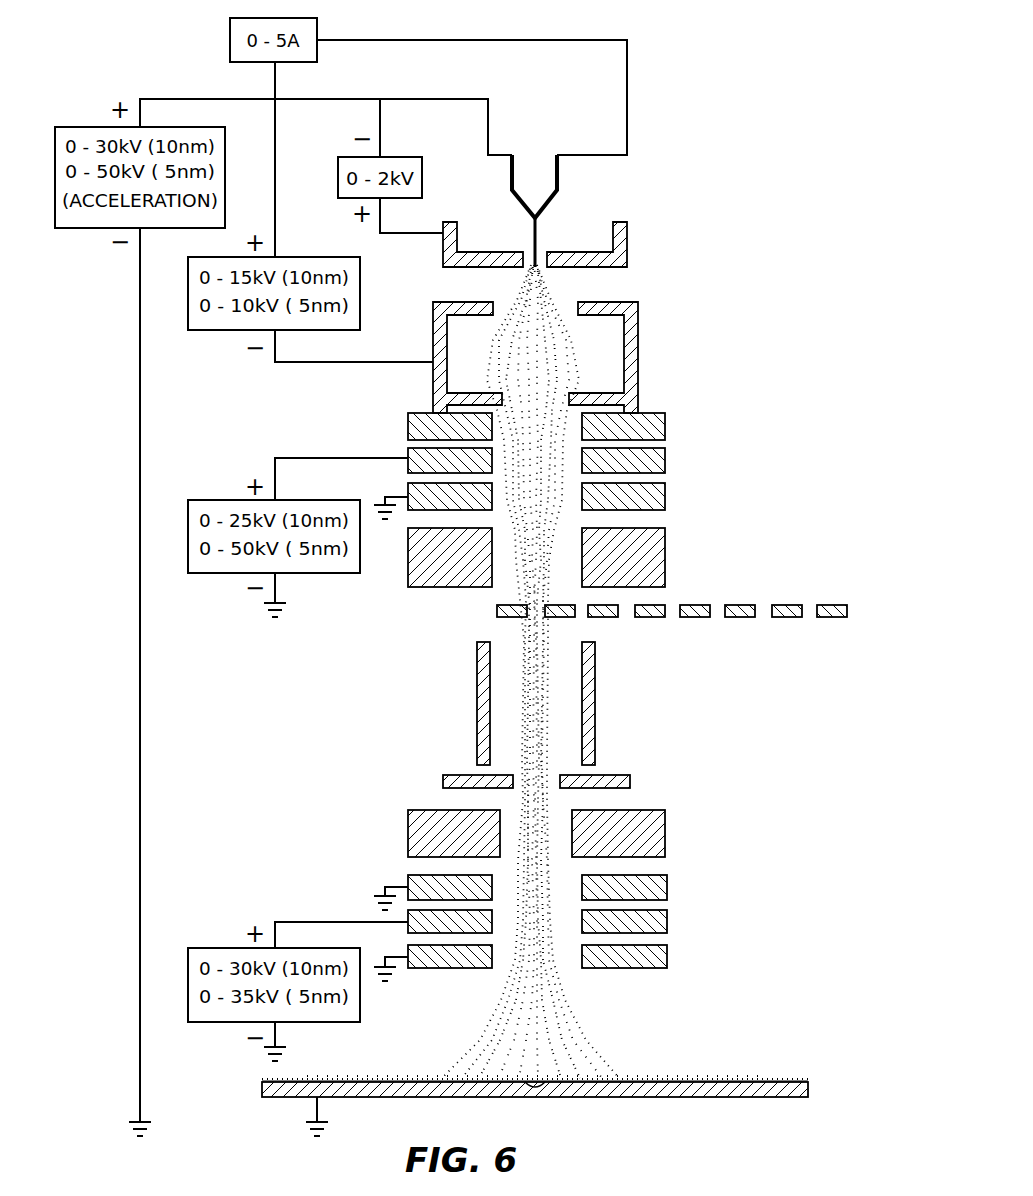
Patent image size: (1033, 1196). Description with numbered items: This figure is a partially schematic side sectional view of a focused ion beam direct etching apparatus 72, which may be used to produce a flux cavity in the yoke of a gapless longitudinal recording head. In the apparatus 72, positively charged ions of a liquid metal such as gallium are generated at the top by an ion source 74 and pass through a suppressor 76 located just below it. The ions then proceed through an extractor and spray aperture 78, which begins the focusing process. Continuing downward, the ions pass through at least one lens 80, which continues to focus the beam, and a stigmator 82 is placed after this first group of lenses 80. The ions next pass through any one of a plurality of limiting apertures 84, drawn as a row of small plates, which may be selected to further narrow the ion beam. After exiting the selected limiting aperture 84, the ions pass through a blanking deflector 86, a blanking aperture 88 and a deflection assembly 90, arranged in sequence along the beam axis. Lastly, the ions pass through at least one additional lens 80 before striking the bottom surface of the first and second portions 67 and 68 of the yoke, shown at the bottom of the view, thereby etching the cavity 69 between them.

The focused ion beam direct etching apparatus 72 is at (661, 68).
The ion source 74 is at (545, 158).
The suppressor 76 is at (627, 245).
The extractor and spray aperture 78 is at (638, 350).
The lens 80 is at (665, 425).
The stigmator 82 is at (665, 560).
The limiting apertures 84 is at (534, 612).
The blanking deflector 86 is at (595, 700).
The blanking aperture 88 is at (630, 781).
The deflection assembly 90 is at (665, 830).
The first portion of the yoke 67 is at (430, 1080).
The second portion of the yoke 68 is at (720, 1082).
The cavity 69 is at (540, 1085).